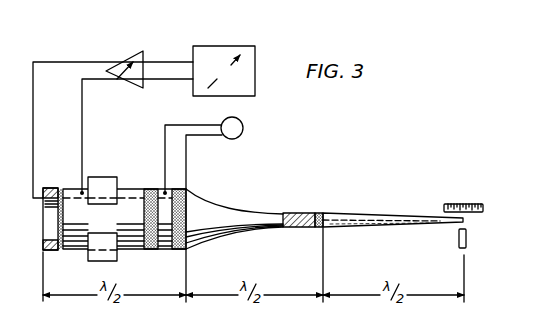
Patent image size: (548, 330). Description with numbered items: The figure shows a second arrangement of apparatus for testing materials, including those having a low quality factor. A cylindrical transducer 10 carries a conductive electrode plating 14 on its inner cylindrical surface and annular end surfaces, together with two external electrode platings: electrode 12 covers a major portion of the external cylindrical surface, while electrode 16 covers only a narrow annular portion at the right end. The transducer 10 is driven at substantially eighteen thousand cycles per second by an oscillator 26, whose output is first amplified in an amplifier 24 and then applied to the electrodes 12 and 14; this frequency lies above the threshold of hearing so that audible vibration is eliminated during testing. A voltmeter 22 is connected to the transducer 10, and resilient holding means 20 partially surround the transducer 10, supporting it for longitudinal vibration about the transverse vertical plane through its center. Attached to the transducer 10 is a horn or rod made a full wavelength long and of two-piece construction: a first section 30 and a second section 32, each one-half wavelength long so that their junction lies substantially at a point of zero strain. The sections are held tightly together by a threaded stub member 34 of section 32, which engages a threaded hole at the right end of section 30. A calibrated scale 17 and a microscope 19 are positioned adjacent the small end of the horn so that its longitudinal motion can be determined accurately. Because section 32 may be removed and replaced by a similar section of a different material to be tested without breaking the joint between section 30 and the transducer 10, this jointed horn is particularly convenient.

The transducer 10 is at (95, 221).
The external conductive electrode plating 12 is at (70, 189).
The conductive electrode plating 14 is at (47, 213).
The external conductive electrode plating 16 is at (165, 251).
The calibrated scale 17 is at (473, 203).
The microscope 19 is at (467, 240).
The resilient holding means 20 is at (104, 177).
The voltmeter 22 is at (242, 136).
The amplifier 24 is at (127, 59).
The oscillator 26 is at (227, 46).
The first section of horn 30 is at (243, 233).
The second section of horn 32 is at (380, 218).
The threaded stub member 34 is at (315, 213).